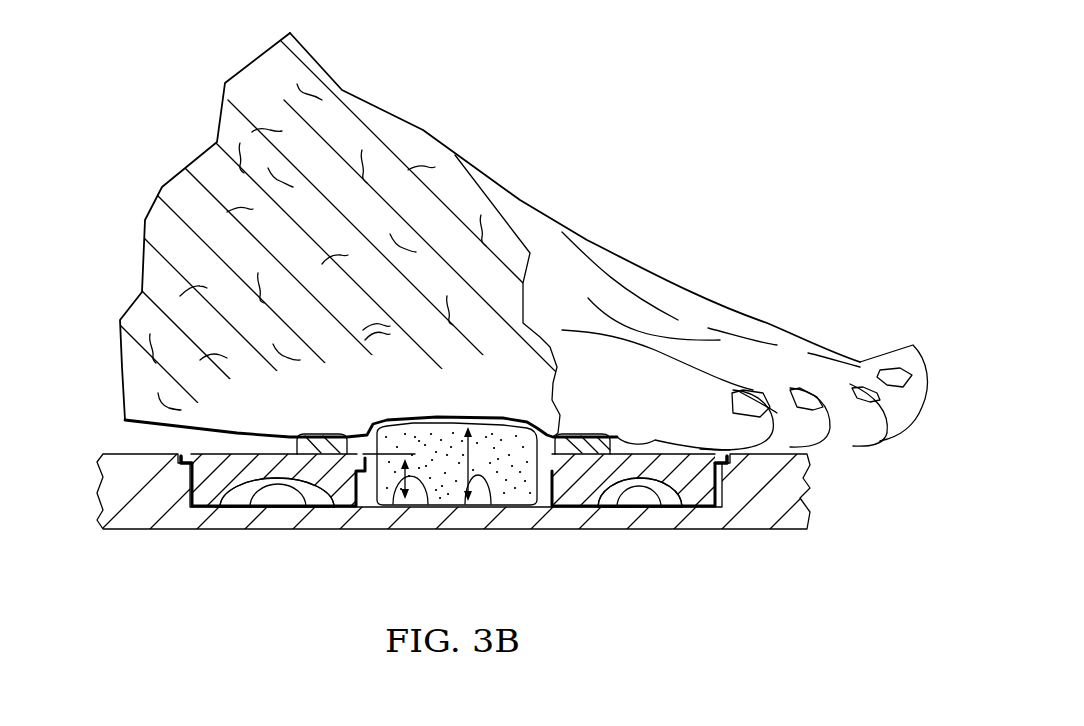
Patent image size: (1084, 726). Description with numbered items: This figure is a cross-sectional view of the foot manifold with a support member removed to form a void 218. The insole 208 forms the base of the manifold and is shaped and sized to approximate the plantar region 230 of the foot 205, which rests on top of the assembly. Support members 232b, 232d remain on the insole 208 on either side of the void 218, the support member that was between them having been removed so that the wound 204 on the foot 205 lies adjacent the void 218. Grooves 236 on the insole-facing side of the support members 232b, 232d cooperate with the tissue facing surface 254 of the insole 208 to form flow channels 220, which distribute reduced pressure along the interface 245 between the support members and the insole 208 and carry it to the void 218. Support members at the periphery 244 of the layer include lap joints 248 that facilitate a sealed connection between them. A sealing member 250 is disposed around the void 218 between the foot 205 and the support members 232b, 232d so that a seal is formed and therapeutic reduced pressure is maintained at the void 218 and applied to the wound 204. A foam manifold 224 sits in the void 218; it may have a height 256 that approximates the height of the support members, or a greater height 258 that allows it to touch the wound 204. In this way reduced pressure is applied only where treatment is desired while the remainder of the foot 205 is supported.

The wound 204 is at (500, 418).
The foot 205 is at (427, 140).
The insole 208 is at (765, 517).
The void 218 is at (413, 425).
The flow channels 220 is at (275, 497).
The foam manifold 224 is at (515, 503).
The plantar region 230 is at (623, 440).
The support member 232b is at (252, 453).
The support member 232d is at (690, 453).
The grooves 236 is at (320, 497).
The periphery 244 is at (203, 498).
The interface 245 is at (227, 500).
The lap joints 248 is at (187, 462).
The sealing member 250 is at (313, 436).
The tissue facing surface 254 is at (623, 497).
The height 256 is at (400, 503).
The height 258 is at (468, 503).